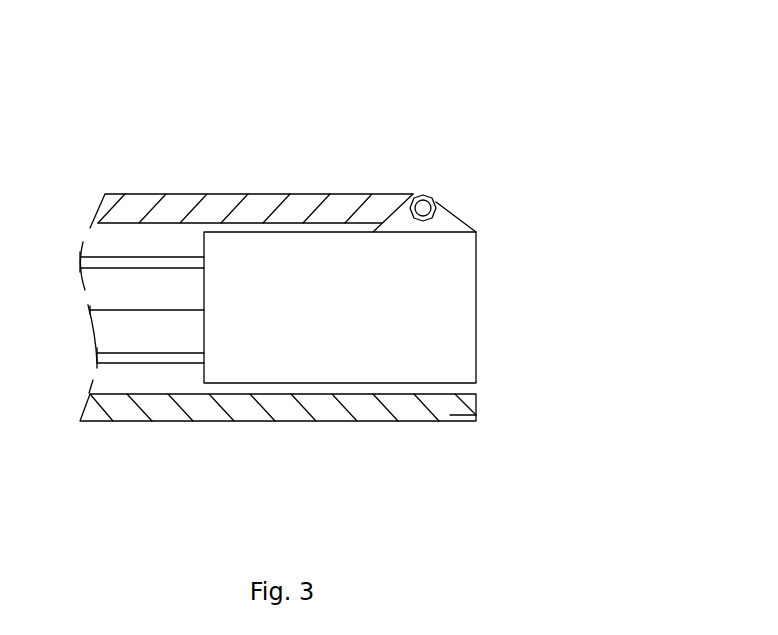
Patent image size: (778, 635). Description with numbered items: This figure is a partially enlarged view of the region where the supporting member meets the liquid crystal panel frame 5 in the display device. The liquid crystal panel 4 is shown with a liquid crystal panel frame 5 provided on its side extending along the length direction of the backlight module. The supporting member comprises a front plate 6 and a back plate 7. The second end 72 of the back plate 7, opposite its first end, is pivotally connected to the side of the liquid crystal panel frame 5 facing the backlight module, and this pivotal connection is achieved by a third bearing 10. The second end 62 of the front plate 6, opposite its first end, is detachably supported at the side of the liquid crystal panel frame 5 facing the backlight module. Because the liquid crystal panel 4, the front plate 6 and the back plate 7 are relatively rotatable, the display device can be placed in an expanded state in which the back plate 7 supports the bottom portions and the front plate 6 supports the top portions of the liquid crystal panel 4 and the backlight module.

The liquid crystal panel 4 is at (153, 323).
The liquid crystal panel frame 5 is at (437, 318).
The front plate 6 is at (275, 410).
The second end of the front plate 62 is at (452, 424).
The back plate 7 is at (303, 193).
The second end of the back plate 72 is at (380, 192).
The third bearing 10 is at (438, 203).